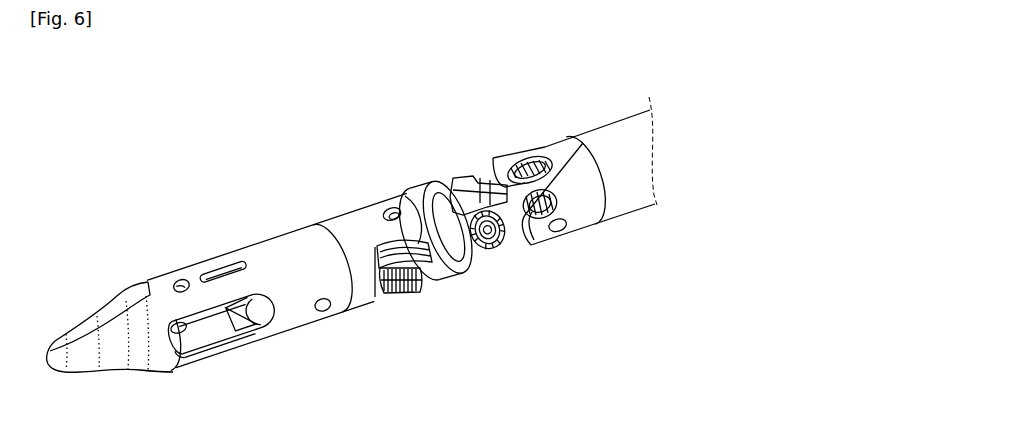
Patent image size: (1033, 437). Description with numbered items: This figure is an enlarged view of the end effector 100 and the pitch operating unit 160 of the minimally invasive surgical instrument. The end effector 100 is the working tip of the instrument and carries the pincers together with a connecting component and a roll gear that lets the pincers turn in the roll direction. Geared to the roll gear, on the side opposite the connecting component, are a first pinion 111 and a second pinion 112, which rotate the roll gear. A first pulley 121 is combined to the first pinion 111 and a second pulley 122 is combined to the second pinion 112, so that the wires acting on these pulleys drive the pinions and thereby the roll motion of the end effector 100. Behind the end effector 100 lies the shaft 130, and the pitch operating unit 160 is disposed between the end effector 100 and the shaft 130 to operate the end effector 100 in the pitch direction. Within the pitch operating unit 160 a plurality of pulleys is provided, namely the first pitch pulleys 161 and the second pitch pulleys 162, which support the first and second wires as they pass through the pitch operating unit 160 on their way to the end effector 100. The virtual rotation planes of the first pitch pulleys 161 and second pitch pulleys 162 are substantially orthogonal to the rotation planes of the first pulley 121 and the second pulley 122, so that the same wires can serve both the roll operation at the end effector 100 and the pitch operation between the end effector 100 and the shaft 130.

The end effector 100 is at (371, 330).
The first pinion 111 is at (433, 290).
The second pinion 112 is at (421, 186).
The first pulley 121 is at (403, 292).
The second pulley 122 is at (383, 206).
The shaft 130 is at (657, 205).
The pitch operating unit 160 is at (459, 142).
The first pitch pulleys 161 is at (498, 244).
The second pitch pulleys 162 is at (515, 238).